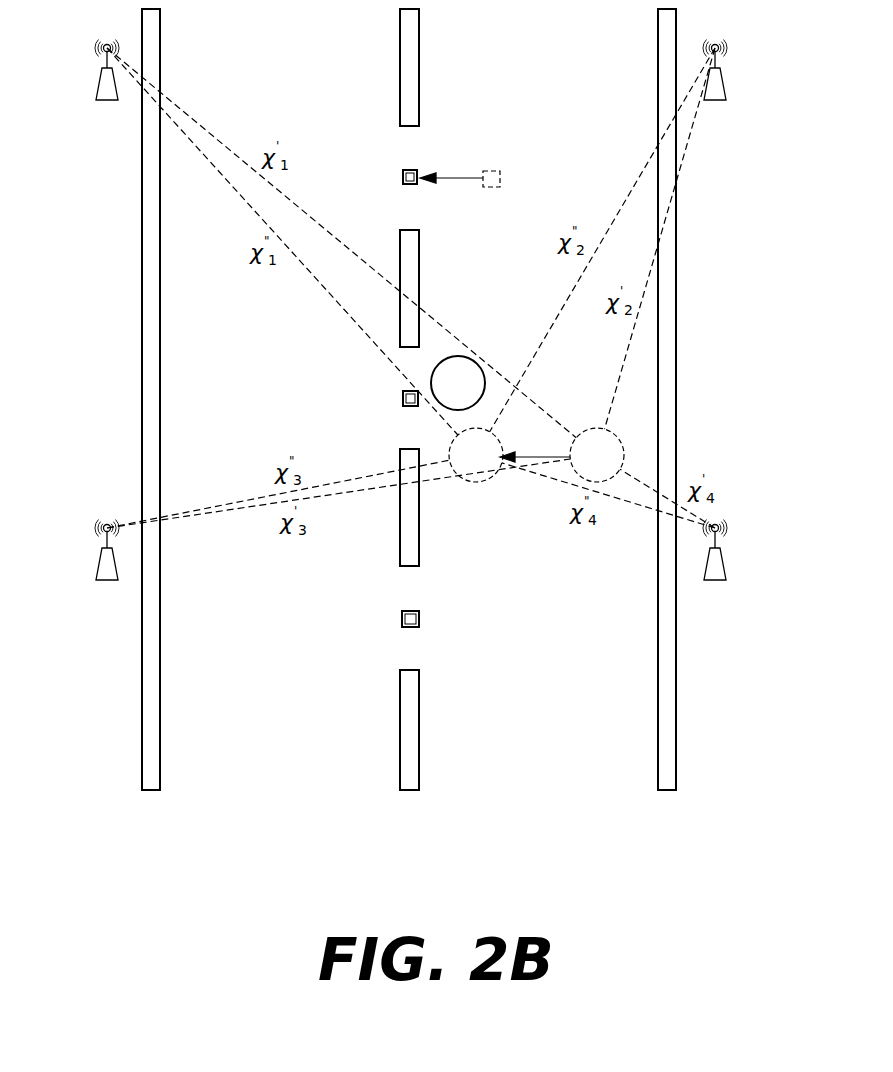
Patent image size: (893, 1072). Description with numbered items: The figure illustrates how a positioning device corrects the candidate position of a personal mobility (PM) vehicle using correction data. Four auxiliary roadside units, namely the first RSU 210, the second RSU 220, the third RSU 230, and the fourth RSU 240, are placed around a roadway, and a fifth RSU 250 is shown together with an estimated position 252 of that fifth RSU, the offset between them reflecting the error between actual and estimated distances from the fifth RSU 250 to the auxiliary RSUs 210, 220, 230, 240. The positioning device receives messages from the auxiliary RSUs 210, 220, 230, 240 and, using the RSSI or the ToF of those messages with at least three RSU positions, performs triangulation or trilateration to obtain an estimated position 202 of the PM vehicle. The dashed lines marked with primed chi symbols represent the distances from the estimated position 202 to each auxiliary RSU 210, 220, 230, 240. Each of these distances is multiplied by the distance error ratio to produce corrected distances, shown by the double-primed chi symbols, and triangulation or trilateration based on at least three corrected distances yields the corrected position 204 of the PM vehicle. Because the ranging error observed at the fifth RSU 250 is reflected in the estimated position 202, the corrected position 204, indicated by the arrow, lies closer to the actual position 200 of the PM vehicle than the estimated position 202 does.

The actual position of PM vehicle 200 is at (456, 356).
The estimated position of PM vehicle 202 is at (594, 428).
The corrected position of PM vehicle 204 is at (478, 483).
The first RSU 210 is at (100, 88).
The second RSU 220 is at (722, 88).
The third RSU 230 is at (100, 568).
The fourth RSU 240 is at (722, 568).
The fifth RSU 250 is at (402, 174).
The estimated position of fifth RSU 252 is at (501, 186).